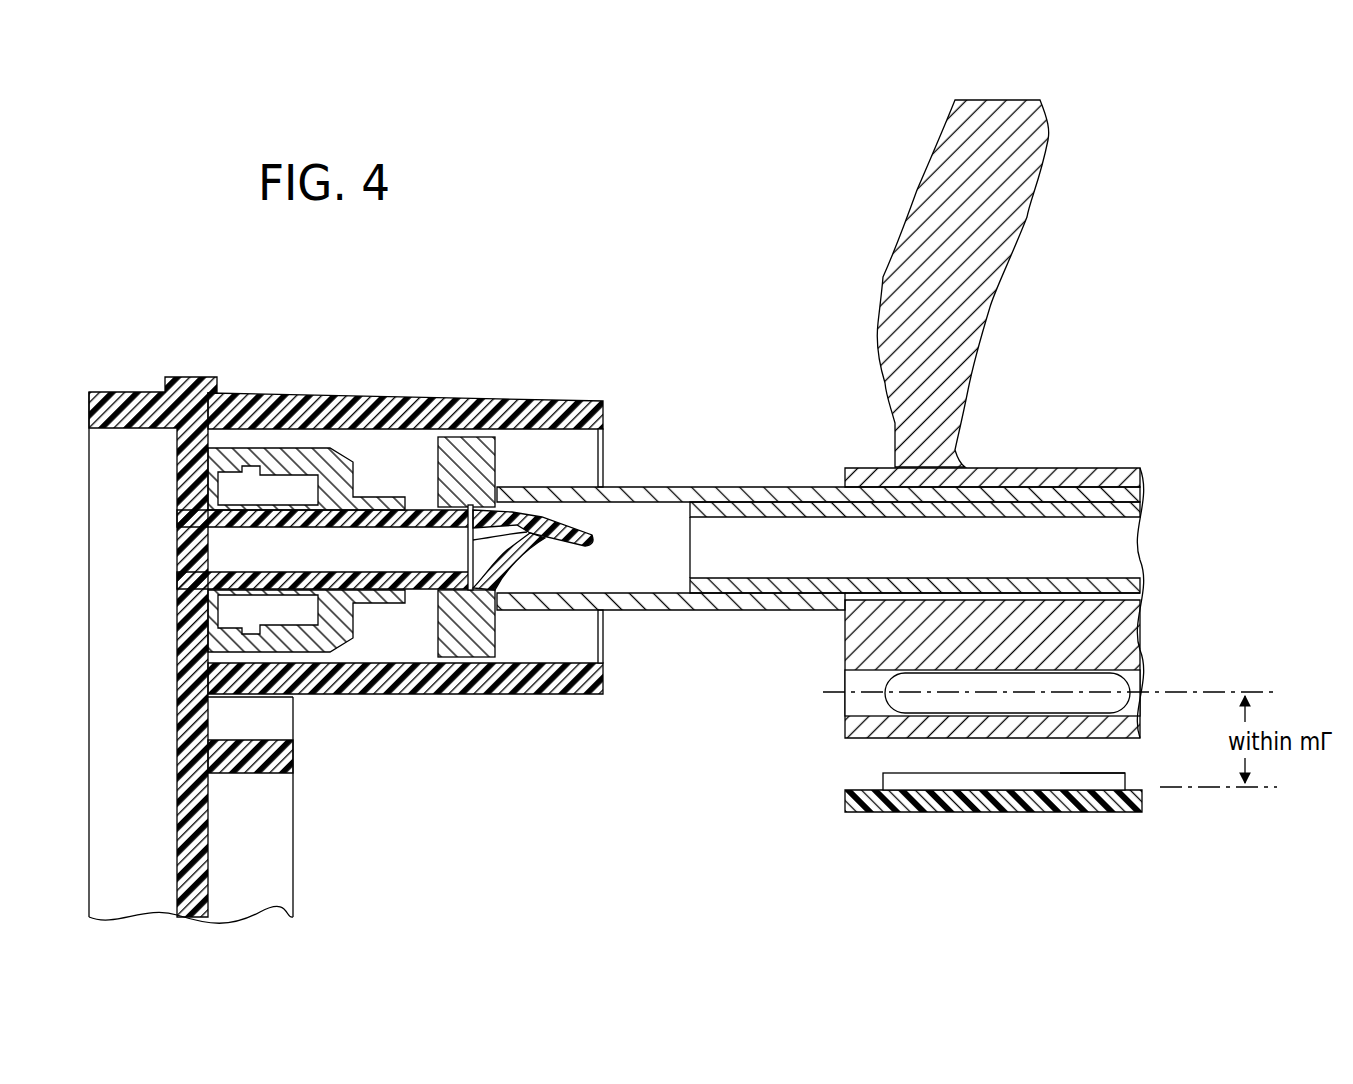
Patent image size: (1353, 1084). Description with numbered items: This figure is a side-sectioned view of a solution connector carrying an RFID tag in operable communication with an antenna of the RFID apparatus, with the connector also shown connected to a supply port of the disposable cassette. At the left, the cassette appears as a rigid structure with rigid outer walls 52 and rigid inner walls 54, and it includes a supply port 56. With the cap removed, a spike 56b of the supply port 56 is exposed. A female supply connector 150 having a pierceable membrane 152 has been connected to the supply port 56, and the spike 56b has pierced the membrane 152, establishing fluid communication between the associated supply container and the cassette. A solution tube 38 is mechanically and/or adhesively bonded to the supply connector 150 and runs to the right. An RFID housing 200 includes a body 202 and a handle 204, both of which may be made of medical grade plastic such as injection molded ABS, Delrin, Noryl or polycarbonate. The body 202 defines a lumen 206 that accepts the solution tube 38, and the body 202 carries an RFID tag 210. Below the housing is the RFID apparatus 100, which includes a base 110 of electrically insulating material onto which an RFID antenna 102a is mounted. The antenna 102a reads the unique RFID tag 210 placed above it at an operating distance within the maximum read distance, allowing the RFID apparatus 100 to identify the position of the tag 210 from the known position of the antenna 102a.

The rigid outer walls 52 is at (128, 393).
The rigid inner walls 54 is at (293, 755).
The supply port 56 is at (606, 401).
The spike 56b is at (574, 546).
The female supply connector 150 is at (273, 463).
The pierceable membrane 152 is at (505, 513).
The solution tube 38 is at (1140, 502).
The lumen 206 is at (1113, 582).
The body 202 is at (845, 640).
The RFID tag 210 is at (1136, 692).
The handle 204 is at (930, 188).
The RFID housing 200 is at (1031, 218).
The RFID apparatus 100 is at (840, 811).
The base 110 is at (985, 812).
The RFID antenna 102a is at (1077, 780).